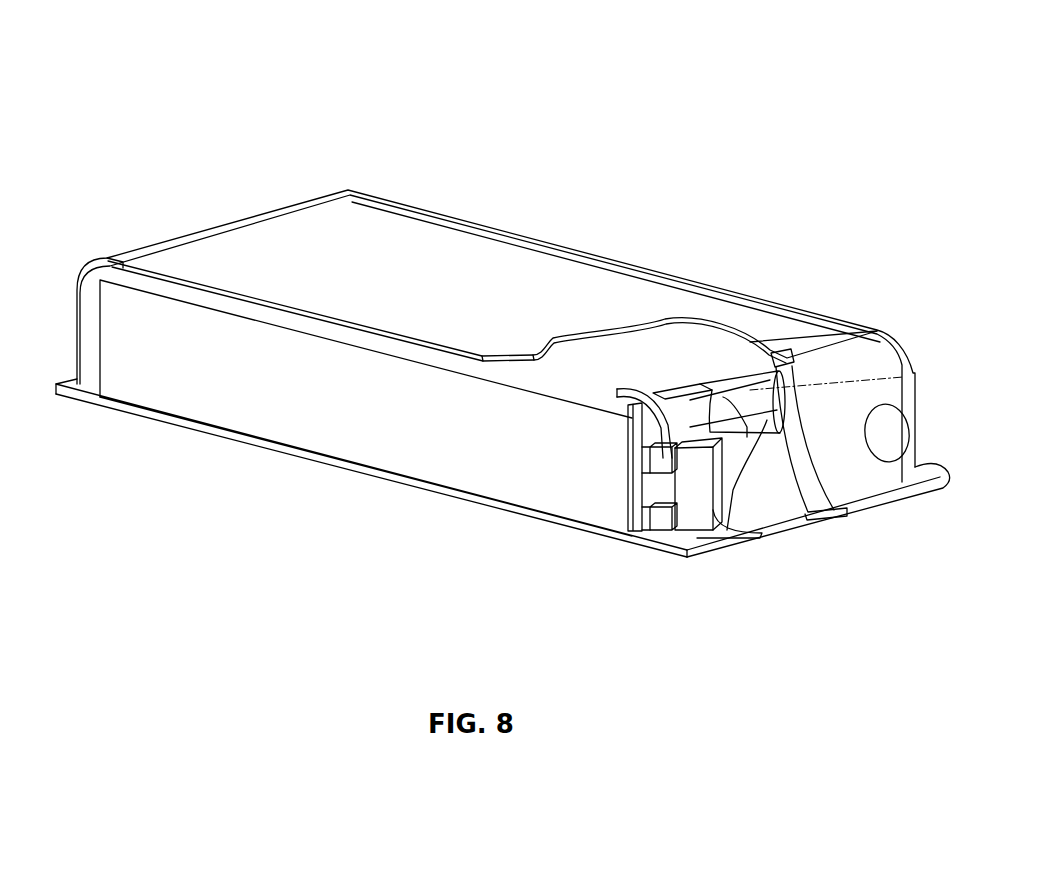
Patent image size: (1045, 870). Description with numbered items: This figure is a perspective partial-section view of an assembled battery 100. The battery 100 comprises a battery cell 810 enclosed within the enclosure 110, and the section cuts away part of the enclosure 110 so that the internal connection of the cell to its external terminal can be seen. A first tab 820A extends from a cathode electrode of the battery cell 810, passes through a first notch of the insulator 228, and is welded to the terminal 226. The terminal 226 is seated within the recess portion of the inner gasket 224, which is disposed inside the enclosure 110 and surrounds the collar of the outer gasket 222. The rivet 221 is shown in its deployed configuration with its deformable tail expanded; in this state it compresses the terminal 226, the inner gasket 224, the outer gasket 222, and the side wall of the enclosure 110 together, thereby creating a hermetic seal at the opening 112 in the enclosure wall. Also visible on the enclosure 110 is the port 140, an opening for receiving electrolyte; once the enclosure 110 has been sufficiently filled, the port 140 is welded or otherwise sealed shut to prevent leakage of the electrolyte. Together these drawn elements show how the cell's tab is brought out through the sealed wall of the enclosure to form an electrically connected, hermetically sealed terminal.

The battery 100 is at (101, 46).
The enclosure 110 is at (422, 239).
The opening 112 is at (667, 519).
The port 140 is at (887, 430).
The rivet 221 is at (692, 496).
The outer gasket 222 is at (657, 521).
The inner gasket 224 is at (812, 417).
The terminal 226 is at (790, 438).
The insulator 228 is at (664, 390).
The battery cell 810 is at (146, 363).
The first tab 820A is at (752, 467).